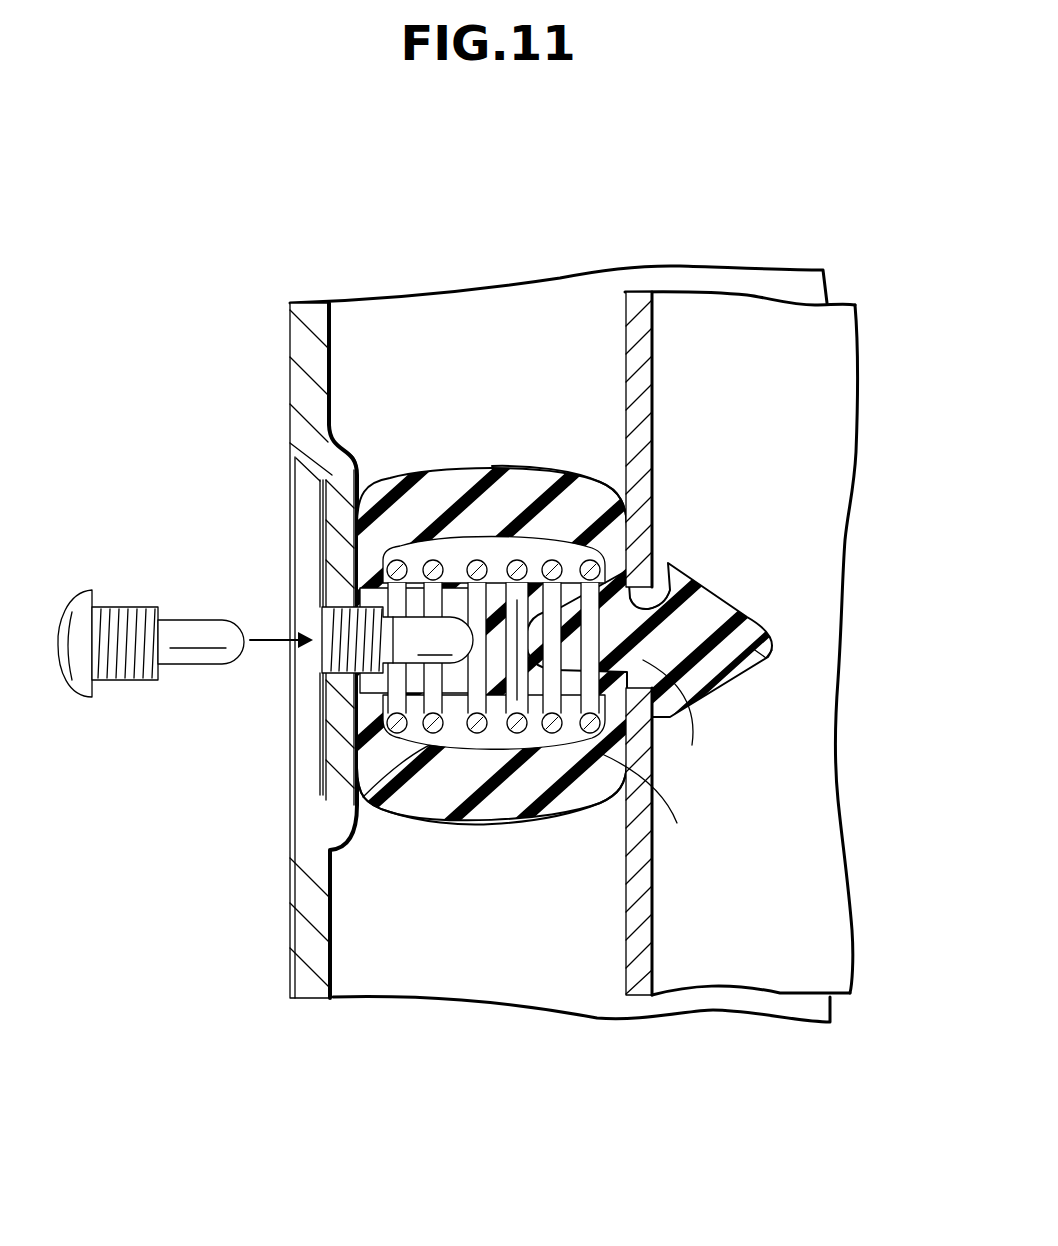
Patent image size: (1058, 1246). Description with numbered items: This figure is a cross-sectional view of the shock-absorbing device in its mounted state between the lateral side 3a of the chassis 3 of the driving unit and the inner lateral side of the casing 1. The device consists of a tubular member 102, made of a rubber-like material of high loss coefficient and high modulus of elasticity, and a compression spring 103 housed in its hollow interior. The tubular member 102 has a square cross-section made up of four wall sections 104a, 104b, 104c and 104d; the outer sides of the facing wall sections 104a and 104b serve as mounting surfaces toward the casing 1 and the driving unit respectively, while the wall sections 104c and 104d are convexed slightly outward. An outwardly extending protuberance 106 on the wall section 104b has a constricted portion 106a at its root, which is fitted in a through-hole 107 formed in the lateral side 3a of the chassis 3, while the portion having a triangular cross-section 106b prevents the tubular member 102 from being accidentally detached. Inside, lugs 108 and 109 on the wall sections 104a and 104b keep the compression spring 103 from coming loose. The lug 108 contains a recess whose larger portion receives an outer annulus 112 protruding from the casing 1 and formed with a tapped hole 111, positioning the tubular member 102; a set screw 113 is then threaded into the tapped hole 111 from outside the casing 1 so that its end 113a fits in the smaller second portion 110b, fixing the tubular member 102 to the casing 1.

The casing 1 is at (562, 303).
The chassis 3 is at (846, 502).
The lateral side 3a is at (626, 395).
The tubular member 102 is at (410, 458).
The compression spring 103 is at (467, 745).
The wall section 104a is at (383, 732).
The wall section 104b is at (617, 546).
The wall section 104c is at (469, 466).
The wall section 104d is at (513, 807).
The protuberance 106 is at (784, 611).
The constricted portion 106a is at (693, 735).
The portion having a triangular cross-section 106b is at (775, 650).
The through-hole 107 is at (650, 597).
The lug 108 is at (363, 797).
The lug 109 is at (677, 823).
The second portion 110b is at (417, 660).
The tapped hole 111 is at (327, 622).
The outer annulus 112 is at (347, 523).
The set screw 113 is at (80, 687).
The end 113a is at (223, 620).